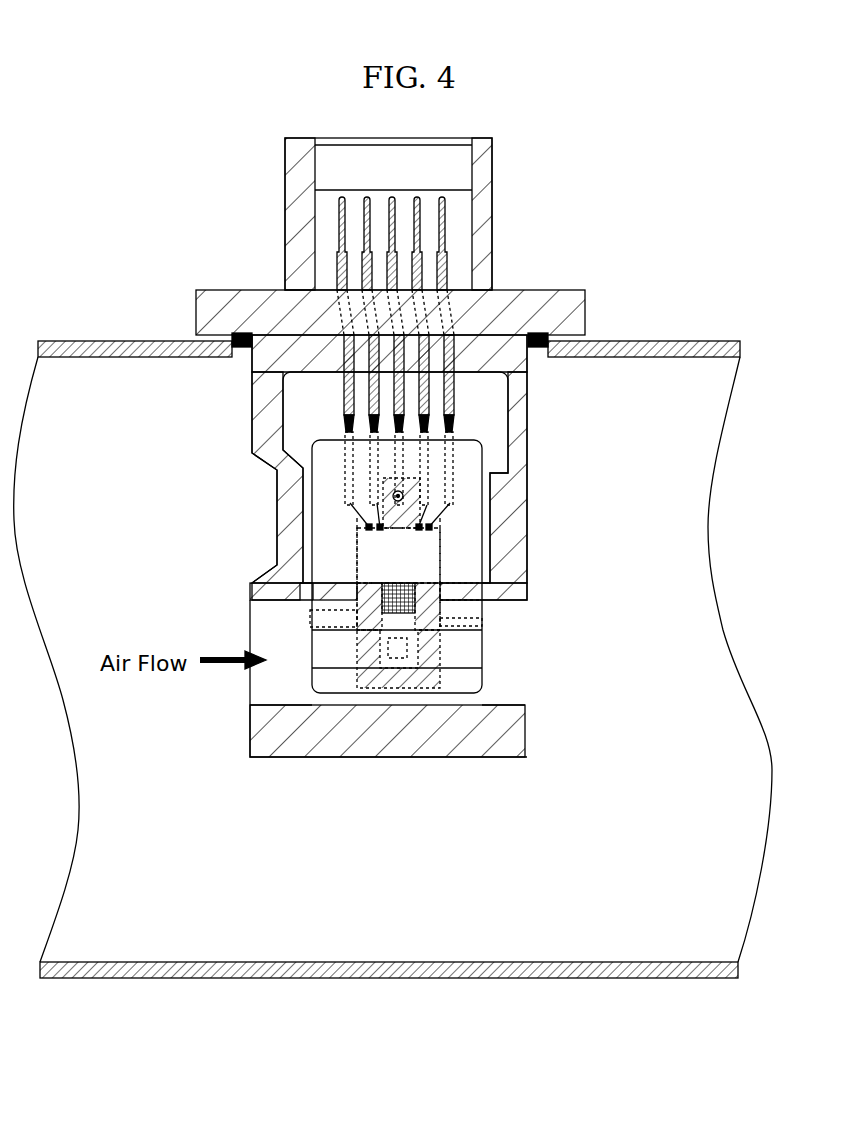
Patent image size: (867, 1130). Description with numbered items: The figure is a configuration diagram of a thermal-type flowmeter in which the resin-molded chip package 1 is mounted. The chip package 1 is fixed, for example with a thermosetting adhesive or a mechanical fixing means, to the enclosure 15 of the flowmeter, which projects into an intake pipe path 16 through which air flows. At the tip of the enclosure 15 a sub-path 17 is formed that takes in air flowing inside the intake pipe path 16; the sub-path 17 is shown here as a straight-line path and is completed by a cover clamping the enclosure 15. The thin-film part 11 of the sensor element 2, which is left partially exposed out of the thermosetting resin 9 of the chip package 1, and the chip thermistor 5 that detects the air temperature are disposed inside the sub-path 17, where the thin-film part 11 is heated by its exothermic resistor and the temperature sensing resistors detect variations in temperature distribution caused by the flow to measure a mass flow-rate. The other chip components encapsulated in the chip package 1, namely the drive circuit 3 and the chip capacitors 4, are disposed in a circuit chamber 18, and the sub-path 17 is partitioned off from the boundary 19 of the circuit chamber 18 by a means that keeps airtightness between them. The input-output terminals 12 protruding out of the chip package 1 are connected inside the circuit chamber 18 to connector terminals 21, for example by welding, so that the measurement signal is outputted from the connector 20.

The chip package 1 is at (487, 528).
The sensor element 2 is at (417, 640).
The drive circuit 3 is at (390, 556).
The chip capacitors 4 is at (427, 473).
The chip thermistor 5 is at (318, 618).
The thermosetting resin 9 is at (465, 562).
The thin-film part 11 is at (400, 655).
The input-output terminals 12 is at (445, 430).
The enclosure 15 is at (252, 398).
The intake pipe path 16 is at (740, 970).
The sub-path 17 is at (278, 686).
The circuit chamber 18 is at (488, 400).
The boundary 19 is at (467, 594).
The connector 20 is at (285, 238).
The connector terminals 21 is at (462, 352).